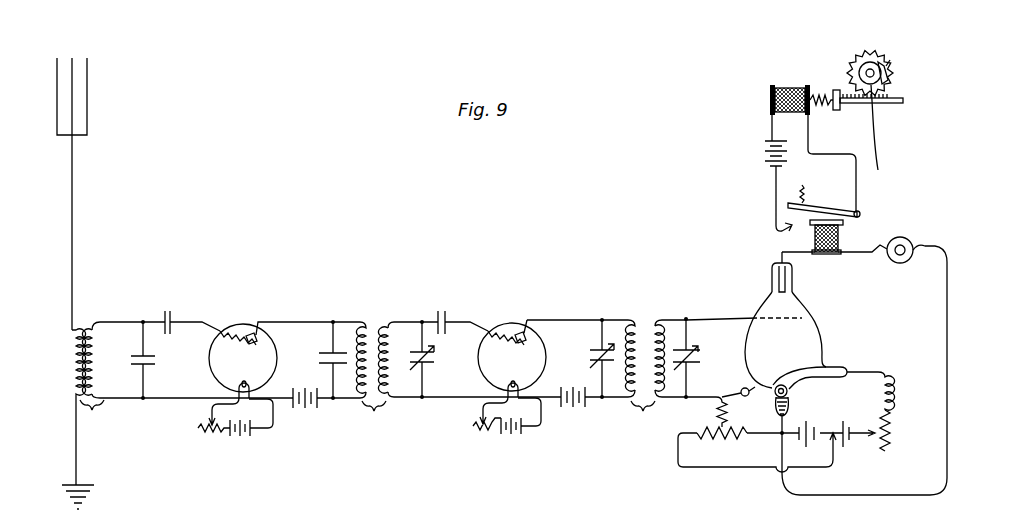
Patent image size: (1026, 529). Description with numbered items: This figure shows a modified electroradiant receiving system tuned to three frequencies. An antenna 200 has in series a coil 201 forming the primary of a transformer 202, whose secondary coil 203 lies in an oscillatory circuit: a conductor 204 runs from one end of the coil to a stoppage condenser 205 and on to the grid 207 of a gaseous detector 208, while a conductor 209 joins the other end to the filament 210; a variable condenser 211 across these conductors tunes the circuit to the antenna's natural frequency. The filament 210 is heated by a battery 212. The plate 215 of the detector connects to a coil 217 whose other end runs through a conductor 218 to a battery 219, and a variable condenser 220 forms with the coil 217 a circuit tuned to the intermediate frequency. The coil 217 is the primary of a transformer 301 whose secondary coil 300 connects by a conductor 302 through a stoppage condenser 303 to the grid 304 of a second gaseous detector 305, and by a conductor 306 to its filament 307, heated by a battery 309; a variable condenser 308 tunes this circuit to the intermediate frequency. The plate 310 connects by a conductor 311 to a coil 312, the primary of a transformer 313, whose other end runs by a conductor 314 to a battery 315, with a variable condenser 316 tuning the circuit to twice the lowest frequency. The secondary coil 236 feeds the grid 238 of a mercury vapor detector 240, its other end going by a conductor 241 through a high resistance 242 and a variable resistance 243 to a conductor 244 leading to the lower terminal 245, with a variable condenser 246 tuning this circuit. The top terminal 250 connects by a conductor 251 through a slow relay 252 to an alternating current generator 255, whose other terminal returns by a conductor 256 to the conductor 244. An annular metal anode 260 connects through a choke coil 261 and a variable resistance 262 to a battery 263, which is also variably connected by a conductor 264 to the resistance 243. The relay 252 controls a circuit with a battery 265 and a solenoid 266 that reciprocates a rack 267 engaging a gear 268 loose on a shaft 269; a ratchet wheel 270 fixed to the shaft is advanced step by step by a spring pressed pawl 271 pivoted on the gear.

The antenna 200 is at (72, 213).
The coil 201 is at (70, 352).
The transformer 202 is at (99, 418).
The secondary coil 203 is at (98, 361).
The conductor 204 is at (122, 318).
The stoppage condenser 205 is at (181, 314).
The grid 207 is at (222, 336).
The gaseous detector 208 is at (243, 358).
The conductor 209 is at (160, 400).
The filament 210 is at (236, 383).
The variable condenser 211 is at (156, 360).
The battery 212 is at (240, 437).
The plate 215 is at (252, 333).
The coil 217 is at (360, 358).
The conductor 218 is at (348, 406).
The battery 219 is at (238, 409).
The variable condenser 220 is at (320, 355).
The secondary coil 236 is at (658, 333).
The grid 238 is at (795, 311).
The mercury vapor detector 240 is at (797, 346).
The conductor 241 is at (686, 397).
The high resistance 242 is at (728, 408).
The variable resistance 243 is at (720, 437).
The conductor 244 is at (772, 424).
The lower terminal 245 is at (791, 395).
The variable condenser 246 is at (691, 352).
The top terminal 250 is at (790, 288).
The conductor 251 is at (792, 250).
The slow relay 252 is at (840, 240).
The alternating current generator 255 is at (905, 240).
The conductor 256 is at (948, 347).
The annular metal anode 260 is at (793, 389).
The choke coil 261 is at (892, 393).
The variable resistance 262 is at (890, 450).
The battery 263 is at (826, 426).
The conductor 264 is at (833, 468).
The battery 265 is at (765, 155).
The solenoid 266 is at (790, 83).
The rack 267 is at (862, 104).
The gear 268 is at (886, 86).
The rotatable shaft 269 is at (887, 129).
The ratchet wheel 270 is at (884, 82).
The spring pressed pawl 271 is at (887, 64).
The coil 300 is at (393, 365).
The transformer 301 is at (379, 415).
The conductor 302 is at (396, 322).
The stoppage condenser 303 is at (443, 311).
The grid 304 is at (503, 329).
The gaseous detector 305 is at (484, 362).
The conductor 306 is at (450, 397).
The filament 307 is at (519, 378).
The variable condenser 308 is at (440, 359).
The battery 309 is at (513, 436).
The plate 310 is at (528, 337).
The conductor 311 is at (564, 309).
The coil 312 is at (637, 326).
The transformer 313 is at (650, 416).
The conductor 314 is at (615, 397).
The battery 315 is at (512, 408).
The variable condenser 316 is at (598, 346).